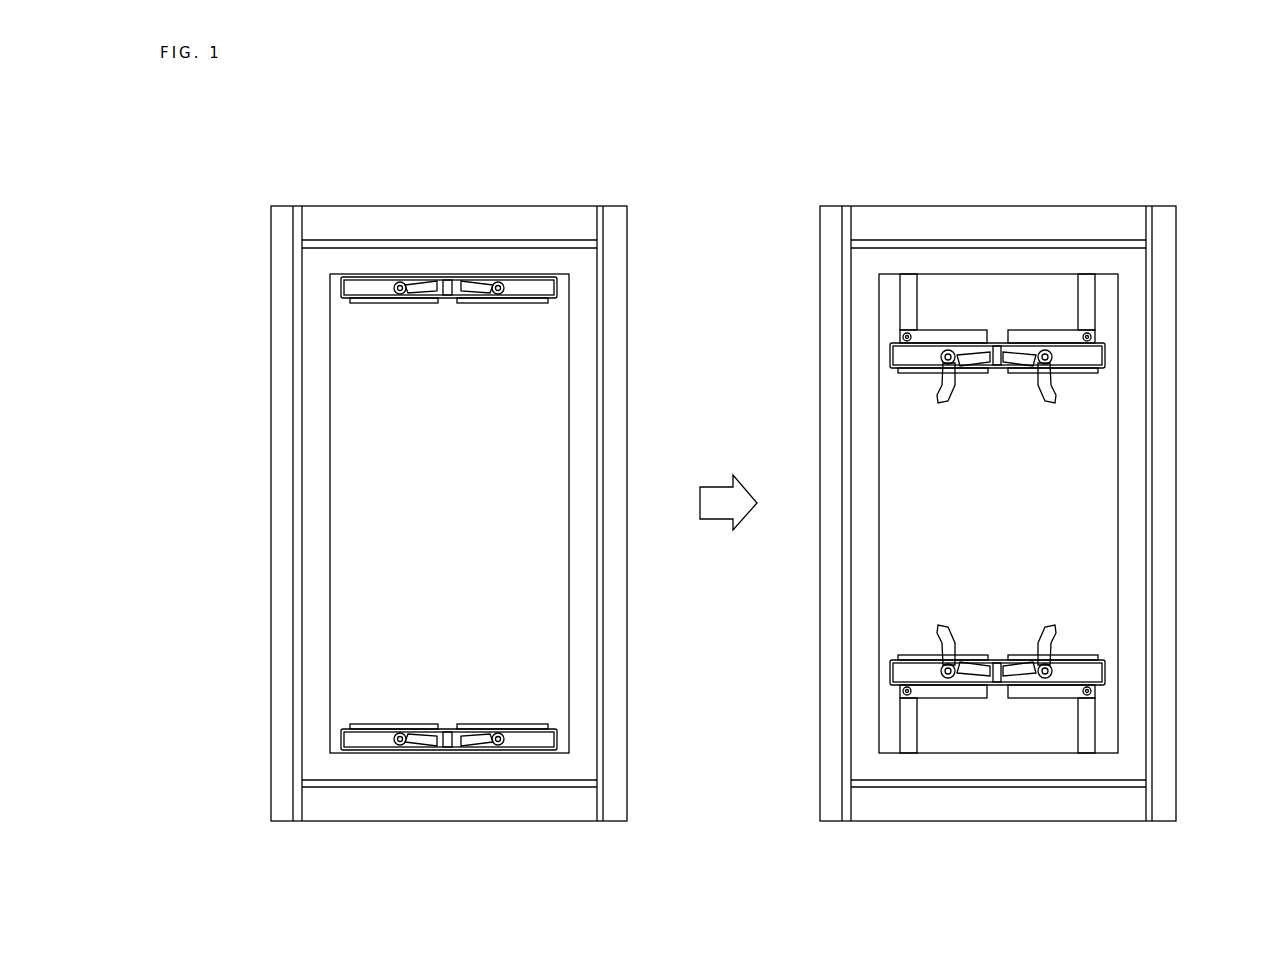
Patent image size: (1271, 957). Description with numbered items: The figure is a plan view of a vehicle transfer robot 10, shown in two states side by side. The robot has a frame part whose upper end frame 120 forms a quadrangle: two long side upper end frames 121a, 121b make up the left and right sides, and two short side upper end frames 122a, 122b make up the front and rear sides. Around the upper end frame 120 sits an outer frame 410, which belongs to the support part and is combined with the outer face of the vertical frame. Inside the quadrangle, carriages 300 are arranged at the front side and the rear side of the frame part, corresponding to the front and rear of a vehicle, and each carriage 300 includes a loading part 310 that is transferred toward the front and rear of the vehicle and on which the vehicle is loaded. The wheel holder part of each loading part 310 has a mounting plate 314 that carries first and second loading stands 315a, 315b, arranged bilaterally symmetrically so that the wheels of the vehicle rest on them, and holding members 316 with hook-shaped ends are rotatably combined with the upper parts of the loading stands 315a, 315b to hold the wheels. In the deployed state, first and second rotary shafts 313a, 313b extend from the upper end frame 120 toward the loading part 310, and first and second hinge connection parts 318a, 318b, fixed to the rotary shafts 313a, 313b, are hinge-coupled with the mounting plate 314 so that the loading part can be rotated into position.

The vehicle transfer robot 10 is at (210, 147).
The outer frame 410 is at (270, 226).
The upper end frame 120 is at (300, 280).
The long side upper end frame 121a is at (317, 406).
The long side upper end frame 121b is at (585, 399).
The short side upper end frame 122a is at (452, 262).
The short side upper end frame 122b is at (447, 768).
The carriage 300 is at (443, 313).
The loading part 310 is at (992, 448).
The first rotary shaft 313a is at (910, 305).
The second rotary shaft 313b is at (1084, 303).
The mounting plate 314 is at (408, 303).
The first loading stand 315a is at (358, 300).
The second loading stand 315b is at (525, 294).
The holding member 316 is at (468, 303).
The first hinge connection part 318a is at (903, 337).
The second hinge connection part 318b is at (1092, 337).